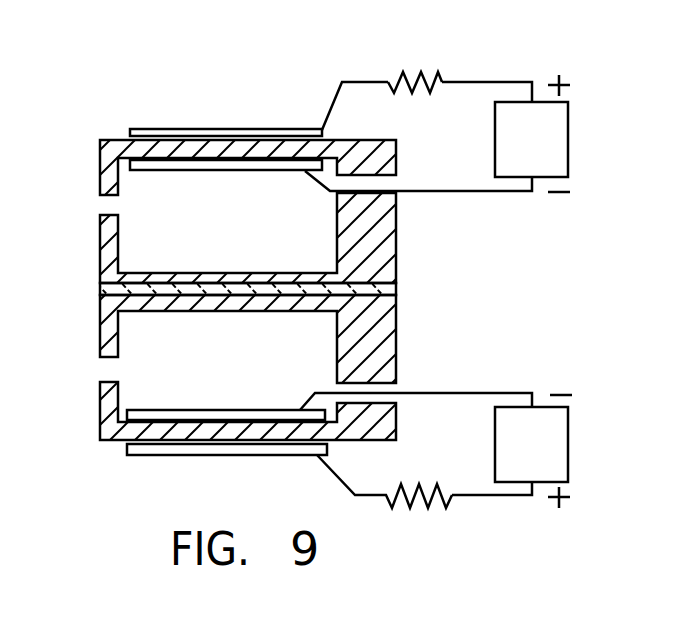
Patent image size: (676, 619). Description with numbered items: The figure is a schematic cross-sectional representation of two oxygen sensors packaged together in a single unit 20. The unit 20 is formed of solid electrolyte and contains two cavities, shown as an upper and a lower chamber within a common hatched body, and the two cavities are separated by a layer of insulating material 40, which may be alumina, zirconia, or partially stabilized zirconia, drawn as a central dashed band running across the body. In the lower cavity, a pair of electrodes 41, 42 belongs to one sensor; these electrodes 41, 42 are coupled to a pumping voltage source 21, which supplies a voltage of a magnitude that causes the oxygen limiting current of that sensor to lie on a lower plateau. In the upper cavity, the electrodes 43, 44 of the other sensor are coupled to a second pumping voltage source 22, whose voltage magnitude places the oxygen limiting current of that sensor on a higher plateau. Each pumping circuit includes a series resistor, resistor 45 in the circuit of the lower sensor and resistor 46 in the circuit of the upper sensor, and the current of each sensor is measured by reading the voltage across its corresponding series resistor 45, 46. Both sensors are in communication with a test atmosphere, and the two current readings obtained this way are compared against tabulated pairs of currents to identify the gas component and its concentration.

The unit 20 is at (100, 168).
The pumping voltage source 21 is at (568, 440).
The pumping voltage source 22 is at (568, 157).
The layer of insulating material 40 is at (100, 292).
The electrode 41 is at (215, 410).
The electrode 42 is at (240, 457).
The electrode 43 is at (225, 173).
The electrode 44 is at (228, 129).
The series resistor 45 is at (428, 483).
The series resistor 46 is at (425, 72).